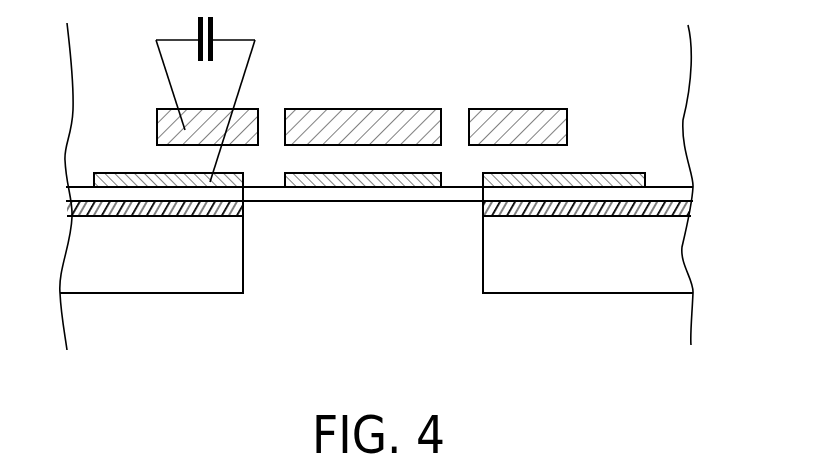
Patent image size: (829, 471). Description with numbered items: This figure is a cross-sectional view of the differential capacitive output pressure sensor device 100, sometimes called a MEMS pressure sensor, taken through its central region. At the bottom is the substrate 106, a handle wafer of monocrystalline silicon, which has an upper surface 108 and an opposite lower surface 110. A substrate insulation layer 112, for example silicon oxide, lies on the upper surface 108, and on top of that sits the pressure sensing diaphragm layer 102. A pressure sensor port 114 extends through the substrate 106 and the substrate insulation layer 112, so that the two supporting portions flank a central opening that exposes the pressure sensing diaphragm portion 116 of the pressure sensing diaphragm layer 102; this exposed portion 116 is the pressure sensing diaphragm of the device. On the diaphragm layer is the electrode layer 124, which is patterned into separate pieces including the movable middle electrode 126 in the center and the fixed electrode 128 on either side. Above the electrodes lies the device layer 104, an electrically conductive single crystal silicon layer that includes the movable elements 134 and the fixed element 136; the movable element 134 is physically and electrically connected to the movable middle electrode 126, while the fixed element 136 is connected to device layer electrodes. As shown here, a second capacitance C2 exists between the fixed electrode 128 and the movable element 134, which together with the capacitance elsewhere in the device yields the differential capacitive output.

The differential capacitive output pressure sensor device 100 is at (170, 344).
The pressure sensing diaphragm layer 102 is at (698, 193).
The device layer 104 is at (390, 104).
The substrate 106 is at (543, 265).
The upper surface 108 is at (633, 217).
The lower surface 110 is at (602, 292).
The substrate insulation layer 112 is at (698, 212).
The pressure sensor port 114 is at (293, 265).
The pressure sensing diaphragm portion 116 is at (417, 206).
The electrode layer 124 is at (653, 177).
The movable middle electrode 126 is at (325, 184).
The fixed electrode 128 is at (117, 172).
The movable element 134 is at (202, 122).
The fixed element 136 is at (364, 117).
The second capacitance C2 is at (205, 96).